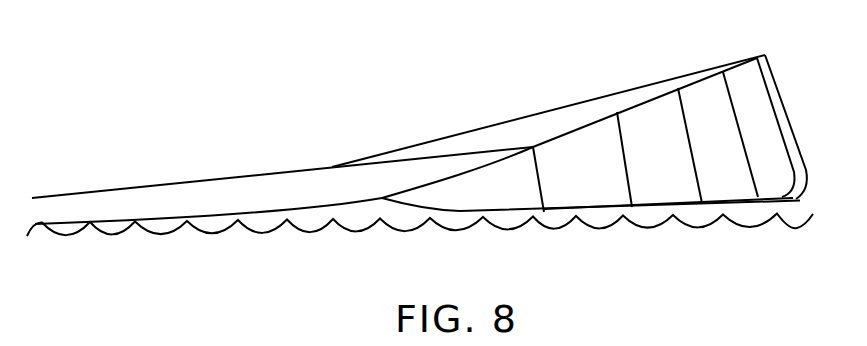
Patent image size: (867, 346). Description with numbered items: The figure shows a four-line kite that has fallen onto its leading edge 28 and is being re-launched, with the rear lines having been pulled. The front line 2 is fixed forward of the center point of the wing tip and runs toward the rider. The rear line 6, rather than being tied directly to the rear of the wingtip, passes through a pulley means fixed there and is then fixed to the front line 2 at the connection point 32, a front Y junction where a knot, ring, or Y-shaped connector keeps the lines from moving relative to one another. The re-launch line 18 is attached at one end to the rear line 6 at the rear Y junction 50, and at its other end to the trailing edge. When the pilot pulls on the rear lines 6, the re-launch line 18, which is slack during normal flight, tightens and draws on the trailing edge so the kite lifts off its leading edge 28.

The front line 2 is at (275, 213).
The rear line 6 is at (230, 177).
The re-launch line 18 is at (532, 118).
The leading edge 28 is at (795, 203).
The connection point (front Y junction) 32 is at (380, 200).
The rear Y junction 50 is at (337, 166).